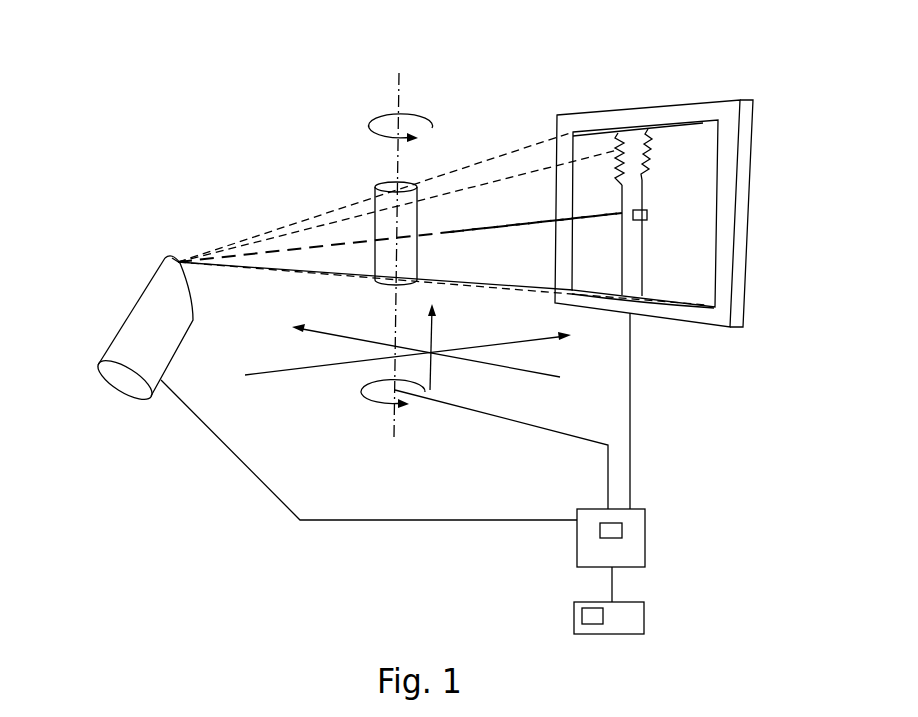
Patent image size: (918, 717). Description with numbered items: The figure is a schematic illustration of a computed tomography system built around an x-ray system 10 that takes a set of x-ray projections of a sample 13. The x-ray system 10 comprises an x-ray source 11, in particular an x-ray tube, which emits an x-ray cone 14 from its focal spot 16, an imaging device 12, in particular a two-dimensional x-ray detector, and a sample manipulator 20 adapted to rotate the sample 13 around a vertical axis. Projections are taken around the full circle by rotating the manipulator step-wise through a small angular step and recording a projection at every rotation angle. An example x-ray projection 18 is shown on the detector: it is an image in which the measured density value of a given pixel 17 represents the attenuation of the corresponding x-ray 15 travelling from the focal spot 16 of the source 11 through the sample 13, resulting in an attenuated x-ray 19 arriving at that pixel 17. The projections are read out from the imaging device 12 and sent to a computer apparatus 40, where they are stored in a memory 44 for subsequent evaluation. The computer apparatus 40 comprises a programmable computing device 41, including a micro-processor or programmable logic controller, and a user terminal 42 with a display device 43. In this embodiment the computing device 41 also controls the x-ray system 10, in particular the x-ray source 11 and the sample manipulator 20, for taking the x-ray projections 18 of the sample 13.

The x-ray system 10 is at (292, 134).
The x-ray source 11 is at (118, 327).
The imaging device 12 is at (628, 100).
The sample 13 is at (387, 217).
The x-ray cone 14 is at (455, 170).
The x-ray 15 is at (287, 250).
The focal spot 16 is at (172, 258).
The pixel 17 is at (647, 211).
The x-ray projection 18 is at (725, 118).
The attenuated x-ray 19 is at (512, 225).
The sample manipulator 20 is at (393, 432).
The computer apparatus 40 is at (536, 572).
The programmable computing device 41 is at (647, 547).
The user terminal 42 is at (645, 625).
The display device 43 is at (577, 613).
The memory 44 is at (620, 537).